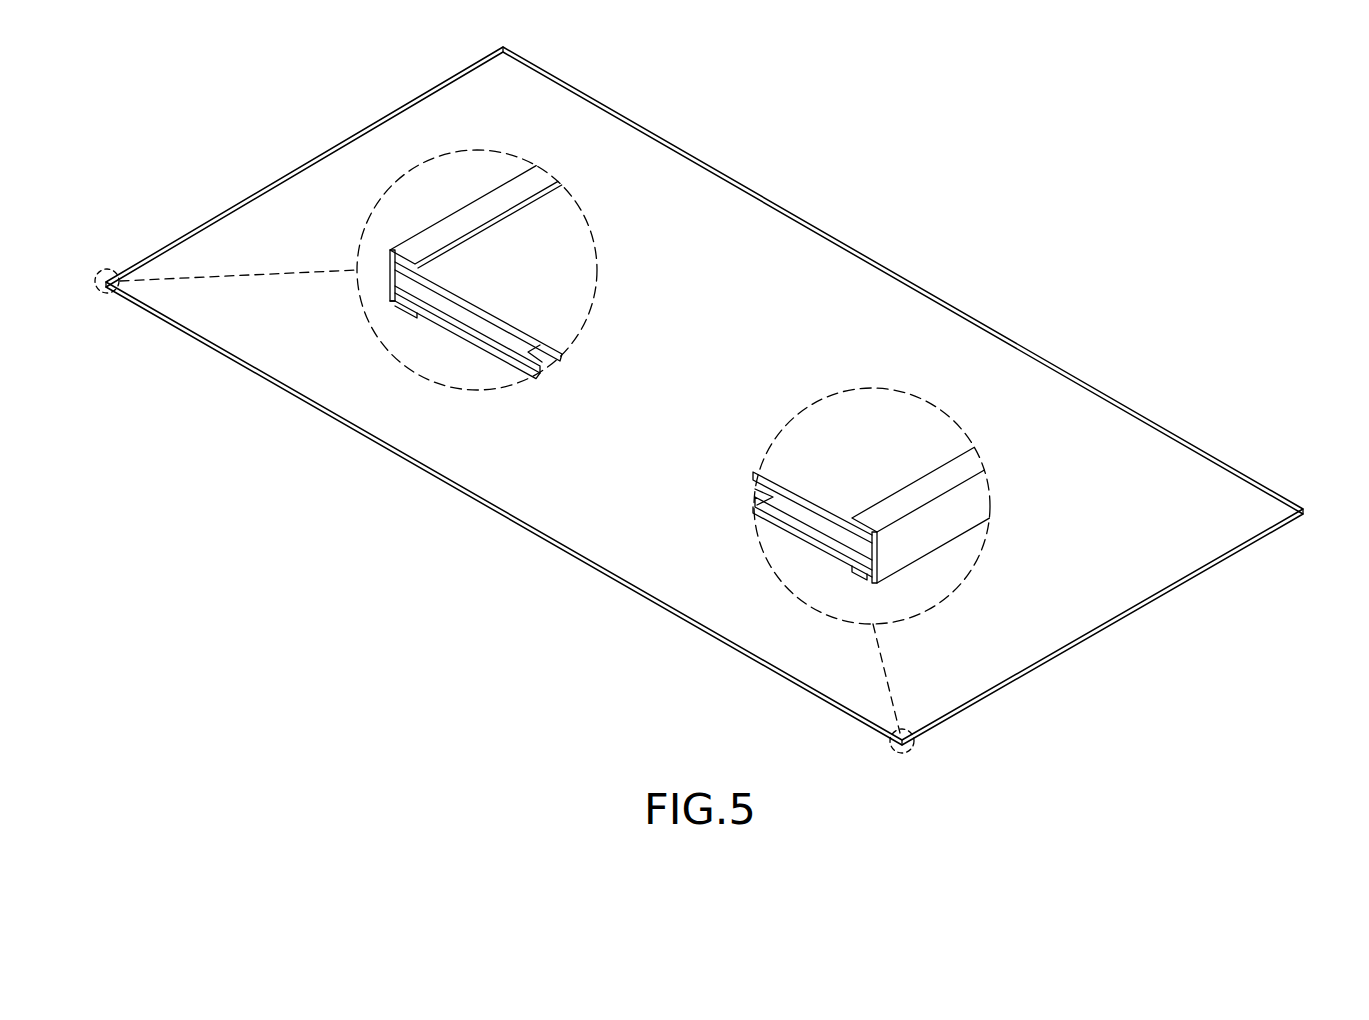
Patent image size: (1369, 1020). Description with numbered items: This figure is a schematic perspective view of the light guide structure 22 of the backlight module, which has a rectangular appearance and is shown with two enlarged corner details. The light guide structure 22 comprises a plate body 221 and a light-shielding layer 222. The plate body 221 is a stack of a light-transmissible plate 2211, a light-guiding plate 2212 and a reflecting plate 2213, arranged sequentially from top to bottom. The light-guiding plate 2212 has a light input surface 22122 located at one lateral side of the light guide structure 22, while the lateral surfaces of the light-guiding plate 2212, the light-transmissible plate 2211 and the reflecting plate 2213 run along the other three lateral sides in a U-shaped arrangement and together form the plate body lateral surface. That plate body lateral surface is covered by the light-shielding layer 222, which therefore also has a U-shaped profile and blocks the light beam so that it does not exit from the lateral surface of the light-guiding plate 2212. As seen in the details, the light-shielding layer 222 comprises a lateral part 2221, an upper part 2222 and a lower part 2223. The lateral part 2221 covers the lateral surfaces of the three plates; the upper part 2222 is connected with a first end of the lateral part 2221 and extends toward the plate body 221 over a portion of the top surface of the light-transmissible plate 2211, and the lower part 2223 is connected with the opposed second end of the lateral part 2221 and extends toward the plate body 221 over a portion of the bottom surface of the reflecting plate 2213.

The light guide structure 22 is at (918, 166).
The plate body 221 is at (762, 420).
The light-transmissible plate 2211 is at (450, 293).
The light-guiding plate 2212 is at (482, 328).
The light input surface 22122 is at (547, 363).
The reflecting plate 2213 is at (505, 358).
The light-shielding layer 222 is at (789, 428).
The lateral part 2221 is at (388, 283).
The upper part 2222 is at (392, 250).
The lower part 2223 is at (397, 308).